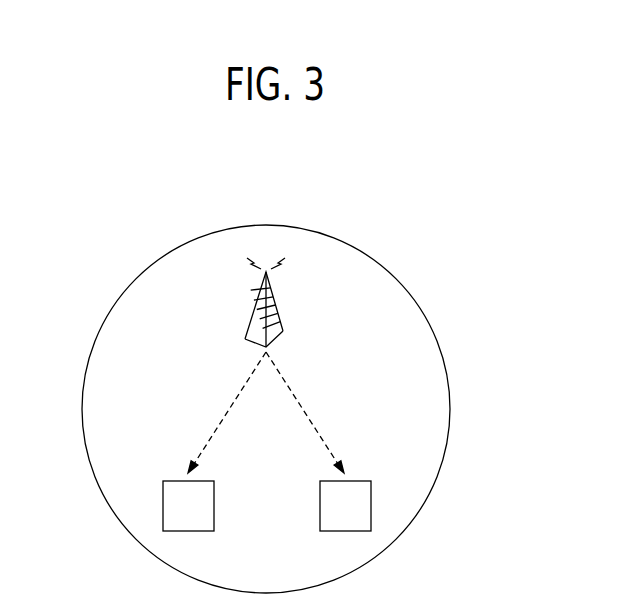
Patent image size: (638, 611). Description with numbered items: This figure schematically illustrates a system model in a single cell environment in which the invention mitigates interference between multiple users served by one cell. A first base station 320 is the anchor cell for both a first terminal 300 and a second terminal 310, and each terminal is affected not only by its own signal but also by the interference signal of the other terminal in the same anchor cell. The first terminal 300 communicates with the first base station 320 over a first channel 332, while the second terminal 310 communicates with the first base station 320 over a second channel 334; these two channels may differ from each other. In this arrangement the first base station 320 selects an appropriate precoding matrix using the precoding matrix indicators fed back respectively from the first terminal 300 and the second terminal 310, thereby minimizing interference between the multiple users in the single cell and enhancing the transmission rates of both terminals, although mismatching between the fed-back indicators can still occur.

The first terminal 300 is at (214, 503).
The second terminal 310 is at (371, 503).
The first base station 320 is at (275, 303).
The first channel 332 is at (240, 392).
The second channel 334 is at (292, 392).